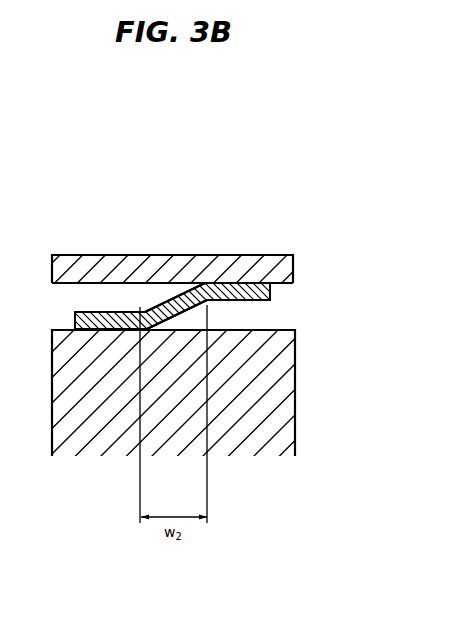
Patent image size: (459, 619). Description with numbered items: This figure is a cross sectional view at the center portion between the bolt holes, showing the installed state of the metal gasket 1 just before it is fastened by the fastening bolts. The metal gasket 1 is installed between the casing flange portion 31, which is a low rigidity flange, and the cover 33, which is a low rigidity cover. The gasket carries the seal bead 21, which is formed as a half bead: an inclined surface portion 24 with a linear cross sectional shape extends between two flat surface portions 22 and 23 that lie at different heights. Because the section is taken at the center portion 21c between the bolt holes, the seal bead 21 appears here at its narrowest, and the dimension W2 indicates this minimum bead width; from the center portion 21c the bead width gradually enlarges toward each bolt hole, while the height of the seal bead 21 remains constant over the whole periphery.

The metal gasket 1 is at (229, 300).
The seal bead 21 is at (229, 300).
The center portion 21c is at (186, 300).
The flat surface portion 22 is at (74, 320).
The flat surface portion 23 is at (271, 292).
The inclined surface portion 24 is at (207, 340).
The casing flange portion 31 is at (272, 418).
The cover 33 is at (294, 256).